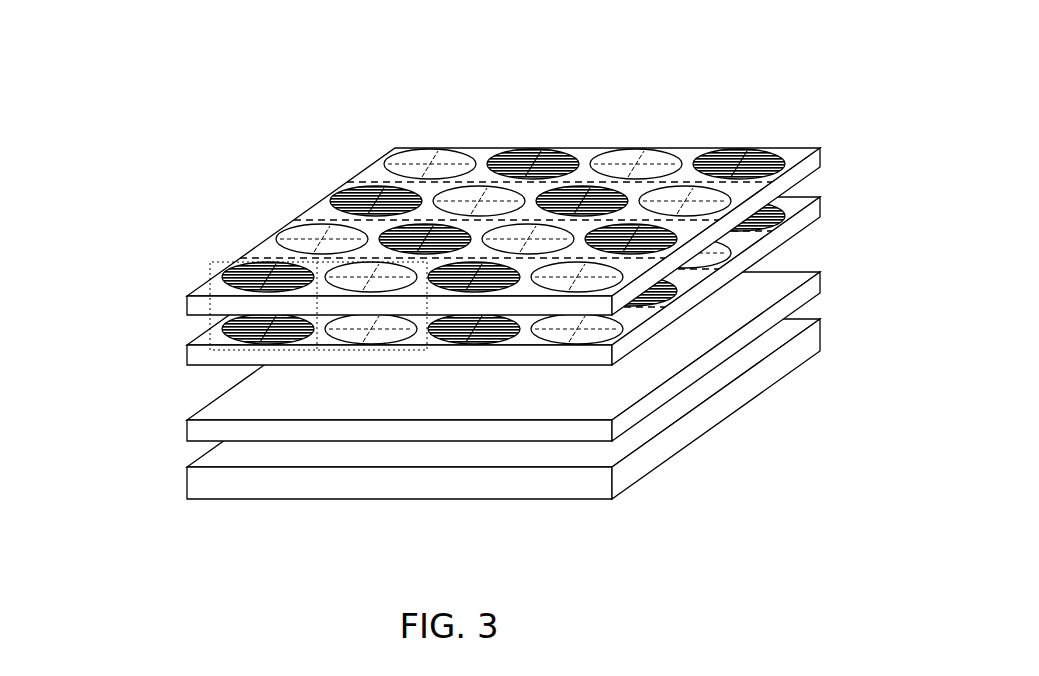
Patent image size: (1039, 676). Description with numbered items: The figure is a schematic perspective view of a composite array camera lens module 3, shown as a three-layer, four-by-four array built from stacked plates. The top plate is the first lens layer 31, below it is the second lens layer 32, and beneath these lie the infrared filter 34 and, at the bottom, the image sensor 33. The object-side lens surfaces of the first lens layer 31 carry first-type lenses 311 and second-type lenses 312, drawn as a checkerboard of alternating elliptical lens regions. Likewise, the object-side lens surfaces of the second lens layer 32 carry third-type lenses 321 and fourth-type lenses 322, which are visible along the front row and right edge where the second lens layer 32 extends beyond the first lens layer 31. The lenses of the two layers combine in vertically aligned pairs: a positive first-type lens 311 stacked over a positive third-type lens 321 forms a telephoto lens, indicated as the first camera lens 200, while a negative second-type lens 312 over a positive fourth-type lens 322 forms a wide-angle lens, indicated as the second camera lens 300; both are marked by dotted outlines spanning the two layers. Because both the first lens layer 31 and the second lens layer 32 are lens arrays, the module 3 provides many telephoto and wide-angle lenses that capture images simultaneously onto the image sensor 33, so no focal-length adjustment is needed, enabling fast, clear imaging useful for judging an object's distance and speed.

The composite array camera lens module 3 is at (122, 113).
The first lens layer 31 is at (187, 305).
The second lens layer 32 is at (187, 355).
The image sensor 33 is at (187, 482).
The infrared filter 34 is at (187, 430).
The first-type lens 311 is at (405, 262).
The second-type lens 312 is at (665, 228).
The third-type lens 321 is at (548, 337).
The fourth-type lens 322 is at (740, 272).
The second camera lens 300 is at (262, 352).
The first camera lens 200 is at (363, 353).